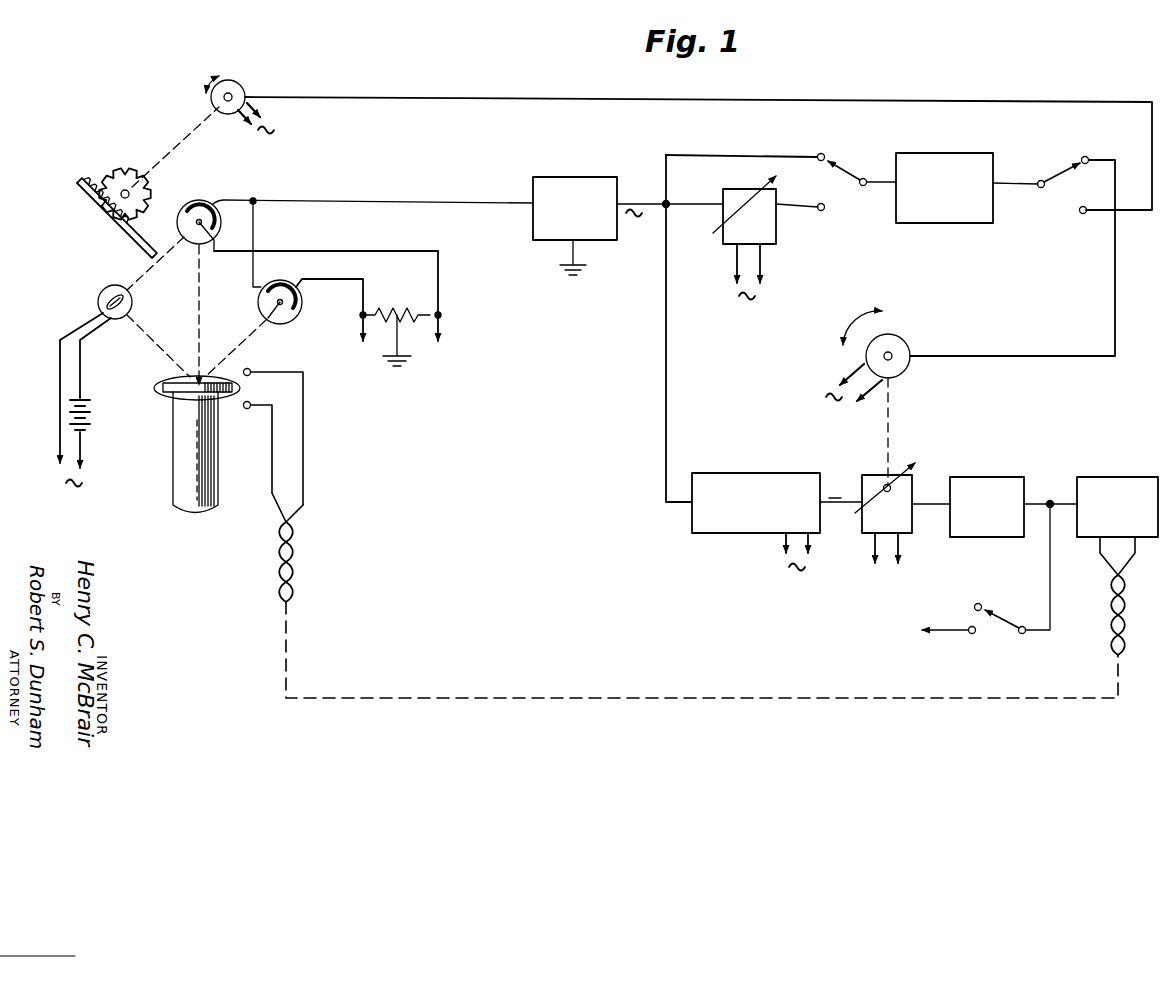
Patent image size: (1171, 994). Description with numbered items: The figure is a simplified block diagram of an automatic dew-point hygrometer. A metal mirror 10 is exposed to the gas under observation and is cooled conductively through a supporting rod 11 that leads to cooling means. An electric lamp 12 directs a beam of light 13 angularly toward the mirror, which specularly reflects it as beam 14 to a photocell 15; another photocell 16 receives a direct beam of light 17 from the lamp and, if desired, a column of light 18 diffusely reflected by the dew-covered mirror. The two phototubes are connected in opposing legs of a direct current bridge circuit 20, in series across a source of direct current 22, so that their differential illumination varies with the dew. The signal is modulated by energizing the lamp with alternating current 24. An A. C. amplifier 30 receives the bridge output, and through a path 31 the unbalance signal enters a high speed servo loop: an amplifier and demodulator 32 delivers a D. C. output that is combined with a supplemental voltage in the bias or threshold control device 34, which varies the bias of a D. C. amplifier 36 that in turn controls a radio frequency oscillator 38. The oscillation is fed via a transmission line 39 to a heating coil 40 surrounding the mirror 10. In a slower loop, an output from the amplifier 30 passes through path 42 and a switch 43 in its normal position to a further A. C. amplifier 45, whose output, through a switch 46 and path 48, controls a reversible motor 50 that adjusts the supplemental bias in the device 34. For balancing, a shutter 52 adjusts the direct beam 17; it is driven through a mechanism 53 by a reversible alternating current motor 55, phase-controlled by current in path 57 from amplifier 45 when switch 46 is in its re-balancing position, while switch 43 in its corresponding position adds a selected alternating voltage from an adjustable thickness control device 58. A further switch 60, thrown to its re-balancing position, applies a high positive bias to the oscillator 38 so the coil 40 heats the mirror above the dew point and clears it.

The mirror 10 is at (222, 382).
The supporting rod 11 is at (172, 447).
The electric lamp 12 is at (103, 292).
The beam of light 13 is at (153, 343).
The reflected beam 14 is at (236, 344).
The photocell 15 is at (292, 320).
The photocell 16 is at (198, 200).
The direct beam of light 17 is at (165, 260).
The diffusely reflected beam 18 is at (197, 316).
The direct current bridge circuit 20 is at (452, 280).
The source of direct current 22 is at (354, 350).
The alternating current 24 is at (56, 468).
The A.C. amplifier 30 is at (577, 177).
The path 31 is at (661, 355).
The amplifier and demodulator 32 is at (775, 466).
The bias or threshold control device 34 is at (939, 472).
The D.C. amplifier 36 is at (980, 475).
The radio frequency oscillator 38 is at (1115, 471).
The transmission line 39 is at (577, 697).
The heating coil 40 is at (156, 399).
The path 42 is at (723, 155).
The switch 43 is at (853, 169).
The A.C. amplifier 45 is at (978, 140).
The switch 46 is at (1066, 162).
The path 48 is at (1113, 268).
The reversible motor 50 is at (905, 335).
The shutter 52 is at (144, 249).
The mechanism 53 is at (124, 174).
The reversible alternating current motor 55 is at (246, 87).
The path 57 is at (930, 101).
The thickness control device 58 is at (773, 232).
The switch 60 is at (1004, 628).